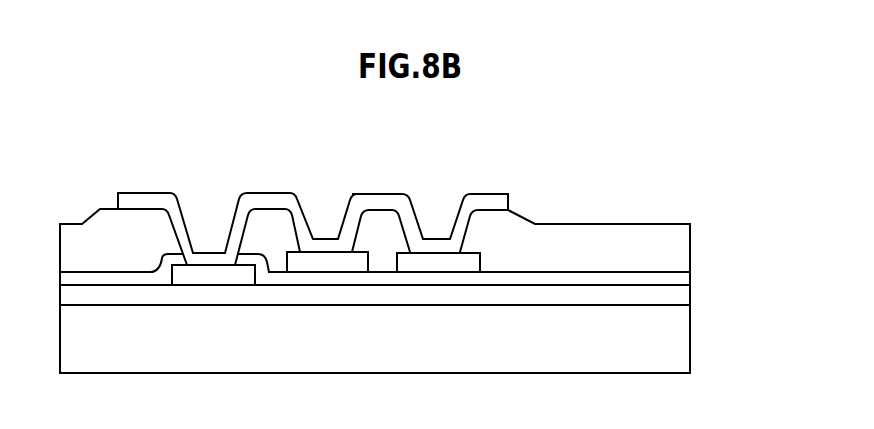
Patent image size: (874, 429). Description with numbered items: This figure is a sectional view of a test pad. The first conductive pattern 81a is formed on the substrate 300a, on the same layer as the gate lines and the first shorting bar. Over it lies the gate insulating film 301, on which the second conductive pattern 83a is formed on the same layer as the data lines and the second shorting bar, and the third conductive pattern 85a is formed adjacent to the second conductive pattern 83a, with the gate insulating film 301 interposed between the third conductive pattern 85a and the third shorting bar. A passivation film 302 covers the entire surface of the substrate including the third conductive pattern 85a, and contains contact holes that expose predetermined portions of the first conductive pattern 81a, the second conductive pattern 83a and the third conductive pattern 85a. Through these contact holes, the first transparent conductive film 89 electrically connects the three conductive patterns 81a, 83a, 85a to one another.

The substrate 300a is at (677, 325).
The gate insulating film 301 is at (677, 284).
The passivation film 302 is at (677, 240).
The first transparent conductive film 89 is at (274, 195).
The first conductive pattern 81a is at (212, 266).
The second conductive pattern 83a is at (332, 257).
The third conductive pattern 85a is at (443, 257).